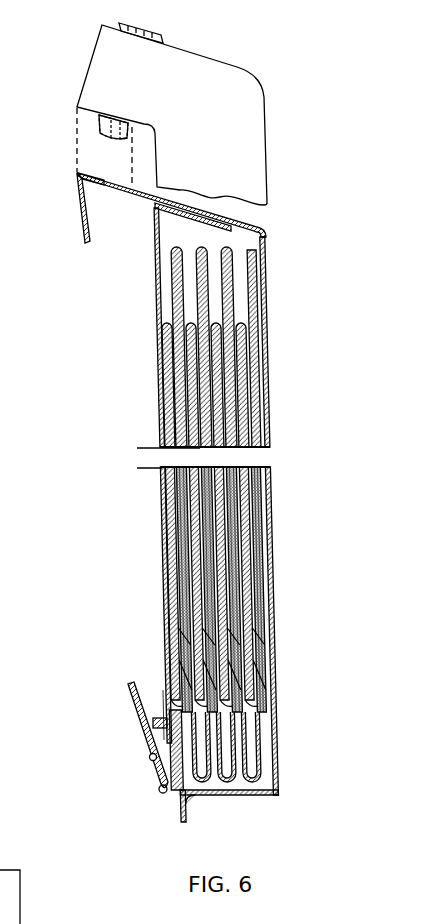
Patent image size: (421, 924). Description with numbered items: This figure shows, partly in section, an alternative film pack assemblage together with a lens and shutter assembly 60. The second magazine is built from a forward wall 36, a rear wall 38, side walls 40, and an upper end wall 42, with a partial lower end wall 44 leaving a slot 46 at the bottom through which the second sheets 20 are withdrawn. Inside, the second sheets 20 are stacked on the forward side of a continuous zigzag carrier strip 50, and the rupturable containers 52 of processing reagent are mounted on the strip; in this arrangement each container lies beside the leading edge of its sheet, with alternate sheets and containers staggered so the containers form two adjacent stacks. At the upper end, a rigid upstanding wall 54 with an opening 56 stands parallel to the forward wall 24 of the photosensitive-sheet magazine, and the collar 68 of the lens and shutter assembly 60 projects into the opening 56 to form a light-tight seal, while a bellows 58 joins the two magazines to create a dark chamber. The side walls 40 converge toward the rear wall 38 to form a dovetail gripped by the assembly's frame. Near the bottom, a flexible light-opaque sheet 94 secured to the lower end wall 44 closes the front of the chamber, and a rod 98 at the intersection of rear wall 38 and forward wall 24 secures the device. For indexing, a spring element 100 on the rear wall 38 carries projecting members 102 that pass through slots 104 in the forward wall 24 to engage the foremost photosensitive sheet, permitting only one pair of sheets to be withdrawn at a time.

The second sheets 20 is at (193, 448).
The forward wall 24 is at (152, 756).
The forward wall 36 is at (268, 372).
The rear wall 38 is at (158, 372).
The side walls 40 is at (188, 290).
The upper end wall 42 is at (218, 210).
The lower end wall 44 is at (262, 797).
The slot 46 is at (175, 797).
The carrier strip 50 is at (250, 754).
The rupturable containers 52 is at (257, 718).
The upstanding wall 54 is at (77, 174).
The opening 56 is at (122, 181).
The bellows 58 is at (88, 241).
The lens and shutter assembly 60 is at (232, 60).
The collar 68 is at (80, 117).
The sheet 94 is at (196, 801).
The rod 98 is at (158, 790).
The spring element 100 is at (165, 690).
The projecting members 102 is at (160, 718).
The slots 104 is at (150, 755).